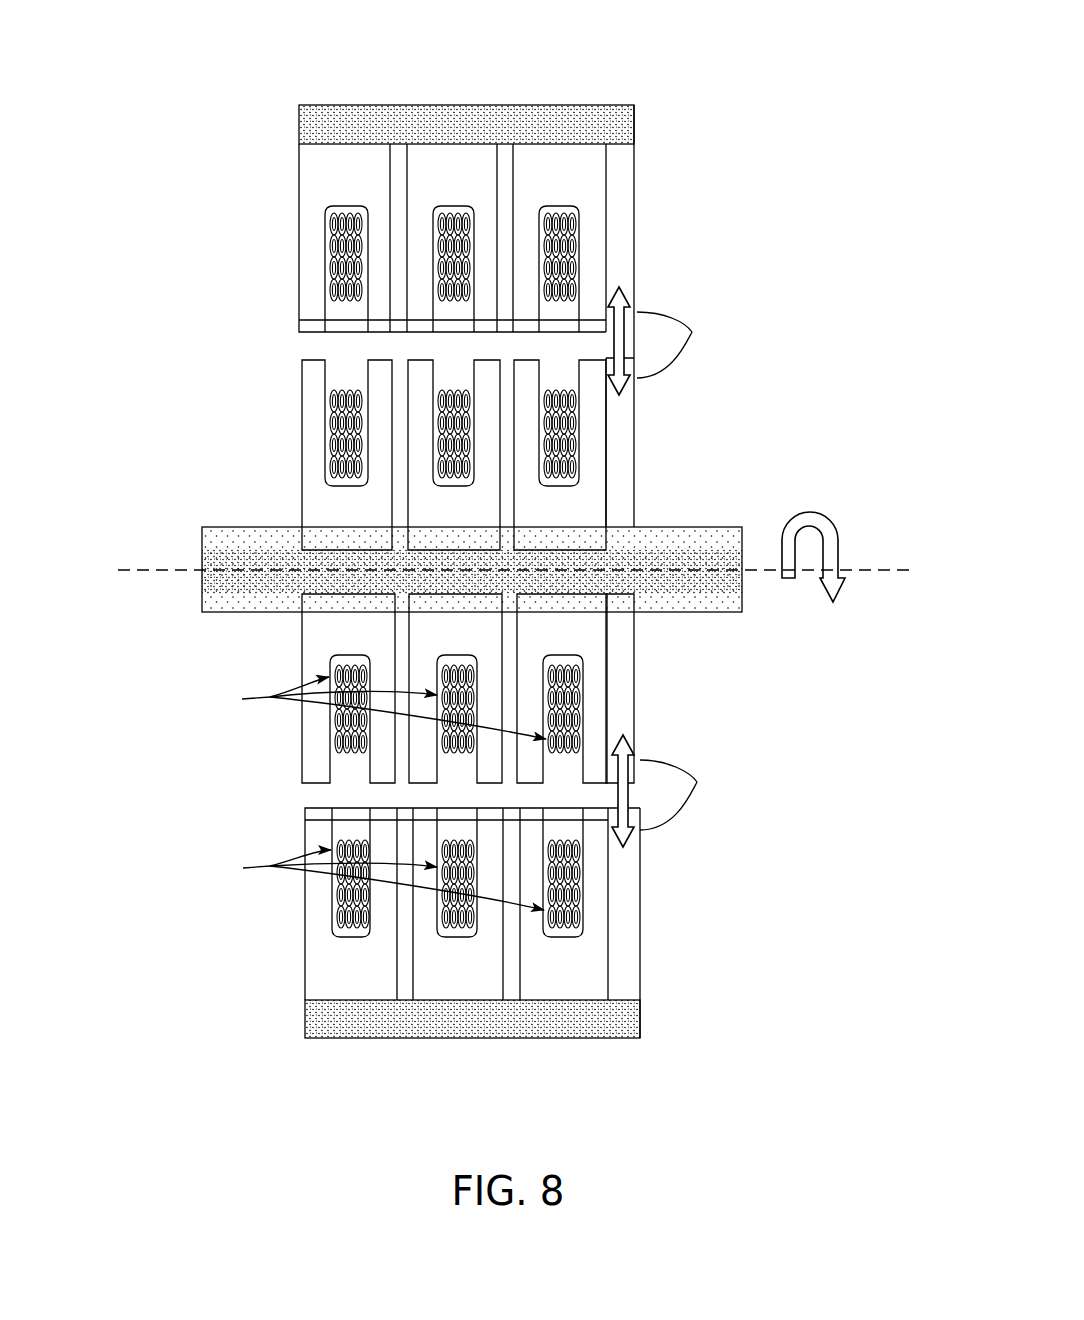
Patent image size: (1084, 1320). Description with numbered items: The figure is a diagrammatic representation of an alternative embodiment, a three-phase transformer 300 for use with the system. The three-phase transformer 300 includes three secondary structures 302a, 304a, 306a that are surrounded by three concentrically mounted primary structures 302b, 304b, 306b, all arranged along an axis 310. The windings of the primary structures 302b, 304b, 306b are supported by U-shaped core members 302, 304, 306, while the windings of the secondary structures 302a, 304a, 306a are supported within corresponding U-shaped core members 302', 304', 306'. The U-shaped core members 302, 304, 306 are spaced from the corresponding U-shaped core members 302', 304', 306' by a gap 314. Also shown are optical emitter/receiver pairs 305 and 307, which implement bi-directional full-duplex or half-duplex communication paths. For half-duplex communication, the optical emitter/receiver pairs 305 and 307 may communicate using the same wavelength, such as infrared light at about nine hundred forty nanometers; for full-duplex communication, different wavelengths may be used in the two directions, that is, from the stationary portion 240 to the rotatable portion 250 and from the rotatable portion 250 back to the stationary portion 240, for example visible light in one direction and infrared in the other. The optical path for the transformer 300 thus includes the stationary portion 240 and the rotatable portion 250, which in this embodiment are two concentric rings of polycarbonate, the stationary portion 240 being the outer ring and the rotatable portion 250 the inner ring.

The three-phase transformer 300 is at (679, 117).
The stationary portion 240 is at (297, 187).
The rotatable portion 250 is at (297, 485).
The U-shaped core member 302 is at (347, 570).
The U-shaped core member 304 is at (455, 570).
The U-shaped core member 306 is at (633, 570).
The U-shaped core member 302' is at (348, 571).
The U-shaped core member 304' is at (455, 571).
The U-shaped core member 306' is at (560, 571).
The secondary structure 302a is at (317, 400).
The secondary structure 304a is at (484, 372).
The secondary structure 306a is at (591, 372).
The primary structure 302b is at (319, 155).
The primary structure 304b is at (429, 155).
The primary structure 306b is at (533, 155).
The optical emitter/receiver pair 305 is at (692, 332).
The optical emitter/receiver pair 307 is at (697, 782).
The axis 310 is at (878, 569).
The gap 314 is at (317, 350).